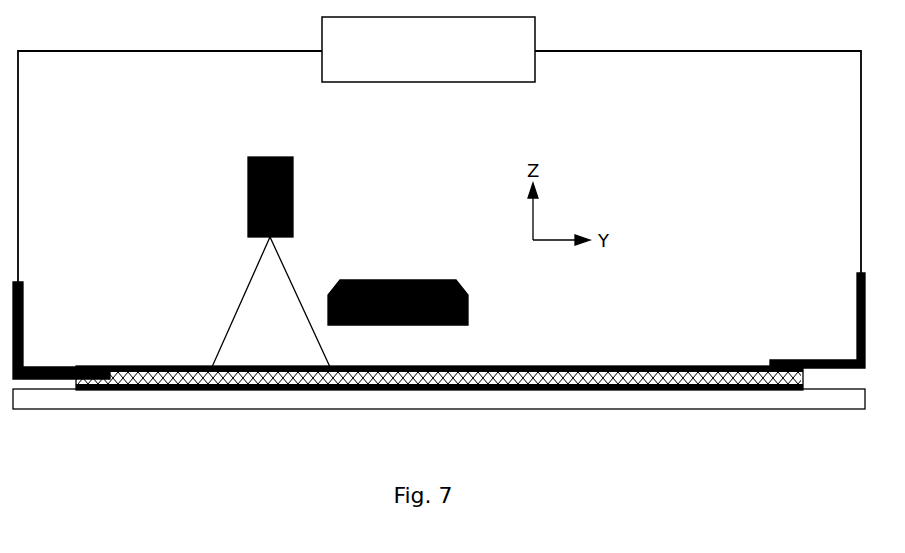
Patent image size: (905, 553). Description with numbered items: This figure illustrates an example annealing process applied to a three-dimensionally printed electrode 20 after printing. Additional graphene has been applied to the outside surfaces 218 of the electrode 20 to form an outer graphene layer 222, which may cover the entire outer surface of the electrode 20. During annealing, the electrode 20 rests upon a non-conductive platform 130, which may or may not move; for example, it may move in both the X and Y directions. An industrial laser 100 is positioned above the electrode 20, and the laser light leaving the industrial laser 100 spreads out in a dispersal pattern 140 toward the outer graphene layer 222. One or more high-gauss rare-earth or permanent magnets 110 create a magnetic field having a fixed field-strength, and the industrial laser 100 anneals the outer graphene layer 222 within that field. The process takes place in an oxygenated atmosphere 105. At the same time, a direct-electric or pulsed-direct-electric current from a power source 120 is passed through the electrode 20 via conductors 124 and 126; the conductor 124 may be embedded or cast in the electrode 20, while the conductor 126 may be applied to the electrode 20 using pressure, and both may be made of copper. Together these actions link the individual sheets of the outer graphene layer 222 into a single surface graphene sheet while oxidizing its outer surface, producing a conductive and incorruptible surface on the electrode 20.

The power source 120 is at (412, 72).
The industrial laser 100 is at (272, 157).
The dispersal pattern 140 is at (285, 270).
The magnets 110 is at (382, 281).
The conductor 124 is at (23, 310).
The oxygenated atmosphere 105 is at (188, 313).
The conductor 126 is at (857, 300).
The electrode 20 is at (520, 367).
The outer graphene layer 222 is at (603, 367).
The outside surfaces 218 is at (700, 367).
The non-conductive platform 130 is at (487, 399).